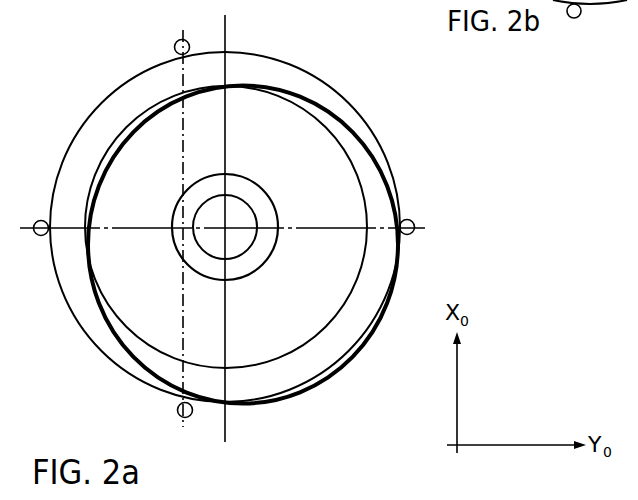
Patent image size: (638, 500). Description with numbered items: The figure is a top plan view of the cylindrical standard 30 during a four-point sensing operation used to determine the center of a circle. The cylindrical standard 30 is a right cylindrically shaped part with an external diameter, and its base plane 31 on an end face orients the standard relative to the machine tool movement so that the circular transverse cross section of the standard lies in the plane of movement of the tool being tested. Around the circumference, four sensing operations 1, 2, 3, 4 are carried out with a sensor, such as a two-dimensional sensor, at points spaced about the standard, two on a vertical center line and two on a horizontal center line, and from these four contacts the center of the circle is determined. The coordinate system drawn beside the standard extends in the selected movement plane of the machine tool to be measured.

In FIG. 2a, the cylindrical standard 30 is at (298, 60).
In FIG. 2a, the base plane 31 is at (329, 98).
In FIG. 2a, the sensing operation 1 is at (175, 37).
In FIG. 2a, the sensing operation 2 is at (180, 424).
In FIG. 2b, the sensing operation 2 is at (574, 22).
In FIG. 2a, the sensing operation 3 is at (36, 217).
In FIG. 2a, the sensing operation 4 is at (412, 217).